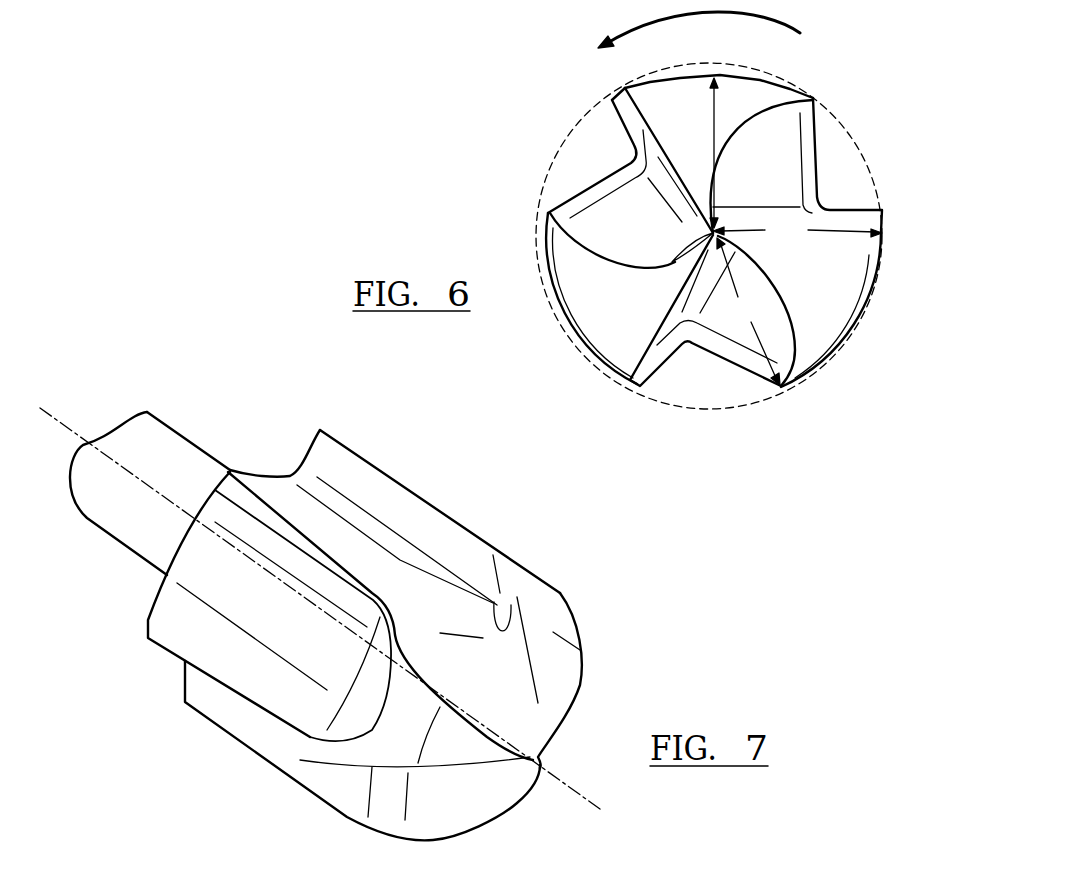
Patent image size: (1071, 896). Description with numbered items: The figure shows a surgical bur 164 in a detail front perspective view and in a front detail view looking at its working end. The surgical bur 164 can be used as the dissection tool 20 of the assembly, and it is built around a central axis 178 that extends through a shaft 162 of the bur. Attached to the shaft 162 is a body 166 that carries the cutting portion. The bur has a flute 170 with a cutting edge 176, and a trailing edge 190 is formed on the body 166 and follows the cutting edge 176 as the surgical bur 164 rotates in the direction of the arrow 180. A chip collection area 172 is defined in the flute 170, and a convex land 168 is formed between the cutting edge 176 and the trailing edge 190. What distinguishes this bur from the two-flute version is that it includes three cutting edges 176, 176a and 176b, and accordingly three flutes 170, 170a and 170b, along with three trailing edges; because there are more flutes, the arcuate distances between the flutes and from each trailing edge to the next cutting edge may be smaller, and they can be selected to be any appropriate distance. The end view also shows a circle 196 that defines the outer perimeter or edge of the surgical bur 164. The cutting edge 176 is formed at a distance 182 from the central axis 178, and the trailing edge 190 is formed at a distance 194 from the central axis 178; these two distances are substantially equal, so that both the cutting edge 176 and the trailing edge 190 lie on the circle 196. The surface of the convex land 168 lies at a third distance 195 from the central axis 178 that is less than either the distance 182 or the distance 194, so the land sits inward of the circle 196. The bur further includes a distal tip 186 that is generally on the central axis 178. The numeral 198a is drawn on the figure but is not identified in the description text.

In FIG. 6, the dissection tool 20 is at (893, 50).
In FIG. 7, the dissection tool 20 is at (93, 340).
In FIG. 7, the shaft 162 is at (146, 408).
In FIG. 6, the surgical bur 164 is at (578, 118).
In FIG. 7, the surgical bur 164 is at (256, 412).
In FIG. 6, the body 166 is at (650, 76).
In FIG. 7, the body 166 is at (398, 460).
In FIG. 6, the convex land 168 is at (737, 73).
In FIG. 6, the flute 170 is at (818, 137).
In FIG. 7, the flute 170 is at (342, 503).
In FIG. 6, the flute 170a is at (582, 185).
In FIG. 6, the flute 170b is at (733, 365).
In FIG. 6, the chip collection area 172 is at (850, 180).
In FIG. 7, the chip collection area 172 is at (320, 470).
In FIG. 6, the cutting edge 176 is at (882, 210).
In FIG. 6, the cutting edge 176a is at (612, 100).
In FIG. 6, the cutting edge 176b is at (640, 385).
In FIG. 6, the central axis 178 is at (683, 270).
In FIG. 7, the central axis 178 is at (567, 787).
In FIG. 6, the arrow 180 is at (720, 30).
In FIG. 6, the distance 182 is at (797, 229).
In FIG. 7, the distal tip 186 is at (543, 752).
In FIG. 6, the trailing edge 190 is at (548, 213).
In FIG. 7, the trailing edge 190 is at (228, 485).
In FIG. 6, the distance 194 is at (748, 311).
In FIG. 6, the third distance 195 is at (708, 153).
In FIG. 6, the circle 196 is at (570, 323).
In FIG. 6, the cutting edge corner 198a is at (816, 97).